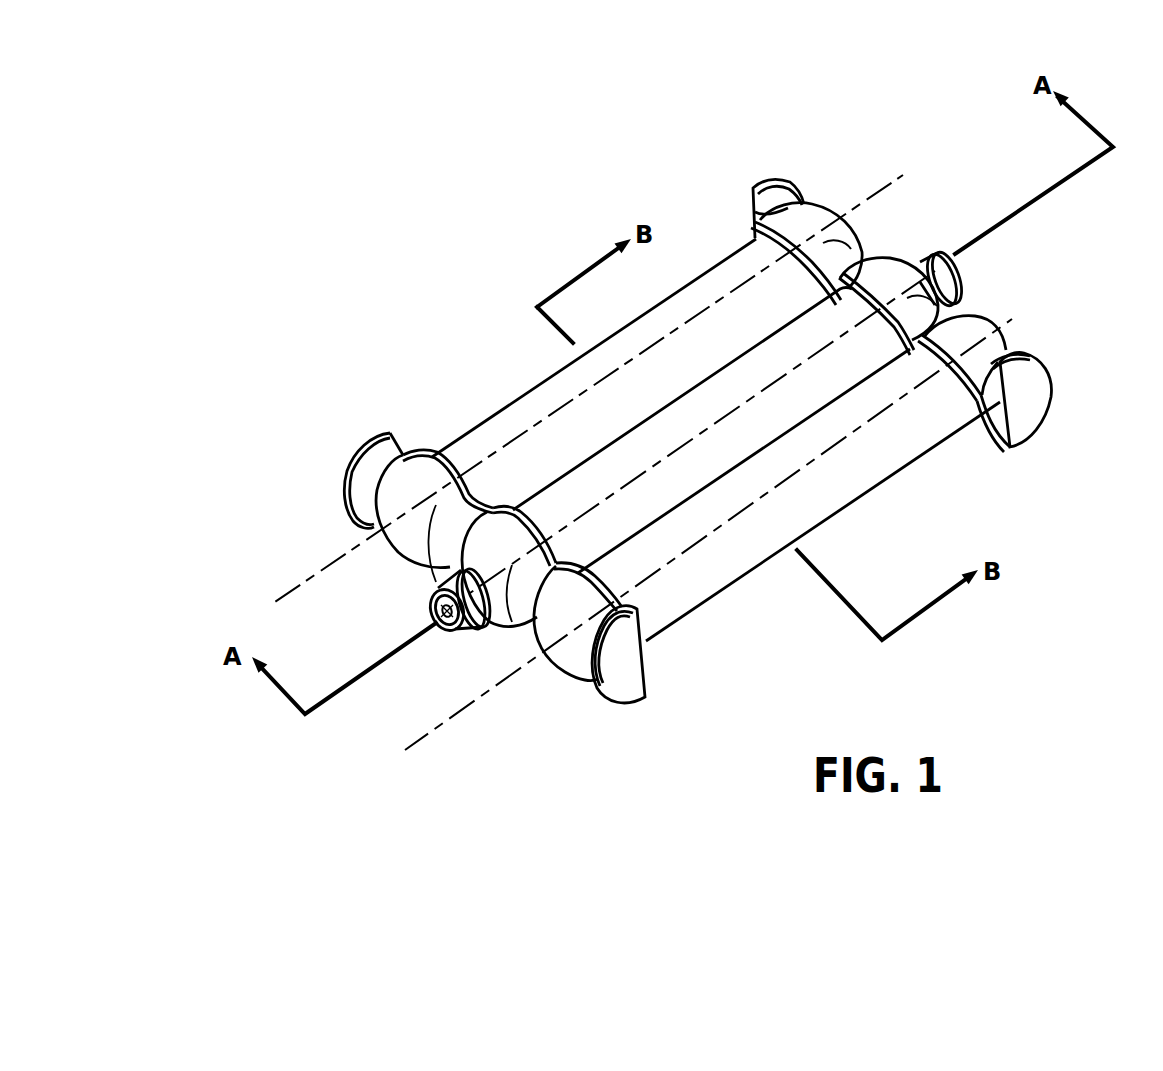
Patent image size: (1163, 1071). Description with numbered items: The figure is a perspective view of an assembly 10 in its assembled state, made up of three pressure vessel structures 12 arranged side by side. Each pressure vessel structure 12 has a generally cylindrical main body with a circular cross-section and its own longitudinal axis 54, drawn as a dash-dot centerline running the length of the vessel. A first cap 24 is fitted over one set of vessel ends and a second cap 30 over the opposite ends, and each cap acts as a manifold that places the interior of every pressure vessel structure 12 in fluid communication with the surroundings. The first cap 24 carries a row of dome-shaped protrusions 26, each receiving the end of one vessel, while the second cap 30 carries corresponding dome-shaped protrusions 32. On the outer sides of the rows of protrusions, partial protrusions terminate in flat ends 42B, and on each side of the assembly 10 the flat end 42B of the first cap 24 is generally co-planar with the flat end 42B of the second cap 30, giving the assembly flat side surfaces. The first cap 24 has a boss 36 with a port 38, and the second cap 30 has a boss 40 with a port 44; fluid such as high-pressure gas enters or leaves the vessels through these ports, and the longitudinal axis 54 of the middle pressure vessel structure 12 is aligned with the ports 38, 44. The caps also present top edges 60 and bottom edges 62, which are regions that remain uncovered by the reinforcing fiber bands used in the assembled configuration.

The assembly 10 is at (411, 237).
The pressure vessel structure 12 is at (716, 242).
The first cap 24 is at (308, 481).
The dome-shaped protrusions 26 is at (383, 541).
The second cap 30 is at (756, 148).
The dome-shaped protrusions 32 is at (827, 205).
The boss 36 is at (468, 633).
The port 38 is at (440, 622).
The boss 40 is at (979, 264).
The flat end 42B is at (1028, 400).
The port 44 is at (960, 262).
The longitudinal axis 54 is at (888, 182).
The top edges 60 is at (421, 450).
The bottom edges 62 is at (1020, 451).